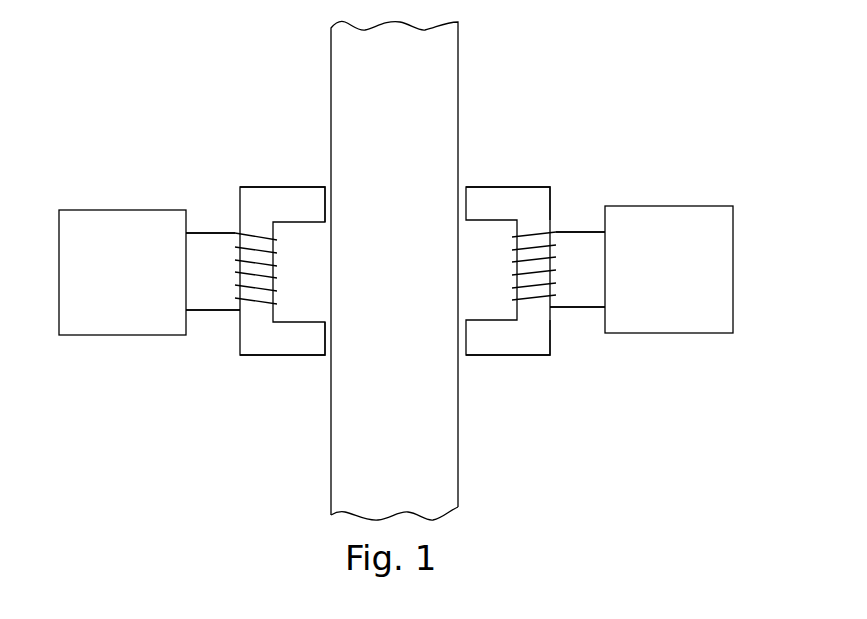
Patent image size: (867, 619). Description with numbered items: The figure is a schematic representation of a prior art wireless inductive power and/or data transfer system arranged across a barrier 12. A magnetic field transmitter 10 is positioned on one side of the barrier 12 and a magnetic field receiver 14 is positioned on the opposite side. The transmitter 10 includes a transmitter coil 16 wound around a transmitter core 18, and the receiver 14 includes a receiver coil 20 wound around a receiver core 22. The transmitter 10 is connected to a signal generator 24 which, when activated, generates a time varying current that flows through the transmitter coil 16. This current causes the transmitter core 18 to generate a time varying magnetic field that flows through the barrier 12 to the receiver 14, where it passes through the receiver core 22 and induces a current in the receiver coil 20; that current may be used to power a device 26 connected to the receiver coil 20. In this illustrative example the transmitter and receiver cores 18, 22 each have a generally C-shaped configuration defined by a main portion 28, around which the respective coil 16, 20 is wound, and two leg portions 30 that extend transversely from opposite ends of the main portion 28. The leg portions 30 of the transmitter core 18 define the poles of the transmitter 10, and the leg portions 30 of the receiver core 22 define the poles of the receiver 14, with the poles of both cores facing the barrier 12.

The magnetic field transmitter 10 is at (232, 158).
The barrier 12 is at (400, 108).
The magnetic field receiver 14 is at (566, 155).
The transmitter coil 16 is at (253, 303).
The transmitter core 18 is at (250, 360).
The receiver coil 20 is at (293, 186).
The receiver core 22 is at (530, 358).
The signal generator 24 is at (133, 295).
The device 26 is at (680, 285).
The main portion 28 is at (240, 228).
The leg portions 30 is at (296, 356).